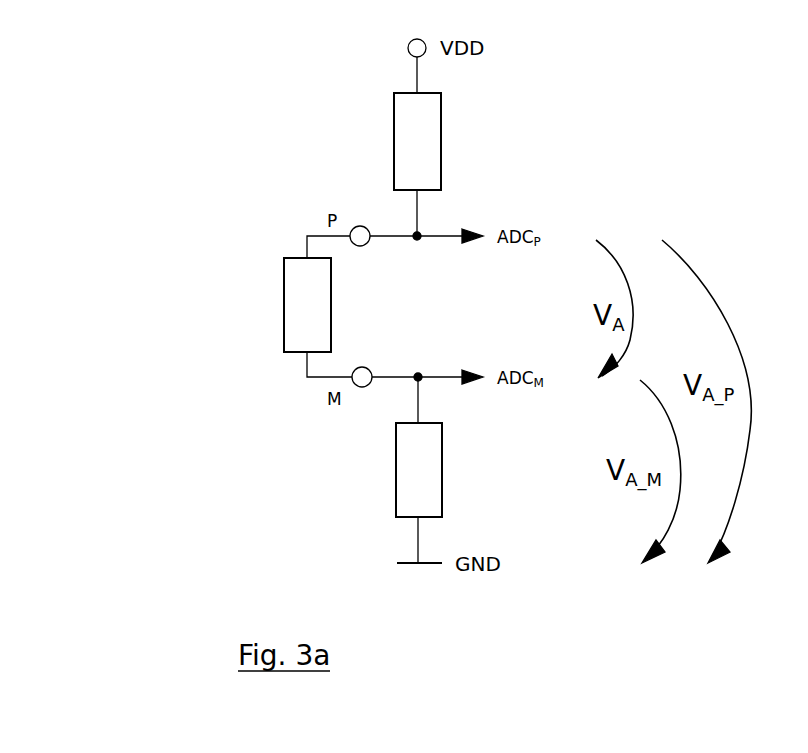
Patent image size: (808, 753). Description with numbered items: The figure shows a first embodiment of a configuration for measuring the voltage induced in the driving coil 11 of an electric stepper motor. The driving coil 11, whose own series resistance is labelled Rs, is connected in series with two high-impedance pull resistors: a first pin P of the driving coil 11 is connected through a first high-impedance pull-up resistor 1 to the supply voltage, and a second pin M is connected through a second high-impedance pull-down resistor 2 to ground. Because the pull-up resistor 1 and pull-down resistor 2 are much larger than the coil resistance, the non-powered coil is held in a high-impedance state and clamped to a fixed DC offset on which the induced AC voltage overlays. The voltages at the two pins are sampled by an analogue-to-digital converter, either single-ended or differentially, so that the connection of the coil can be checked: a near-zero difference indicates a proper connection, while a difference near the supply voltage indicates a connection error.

The driving coil 11 is at (285, 305).
The resistor R1 1 is at (440, 141).
The resistor R2 2 is at (442, 470).